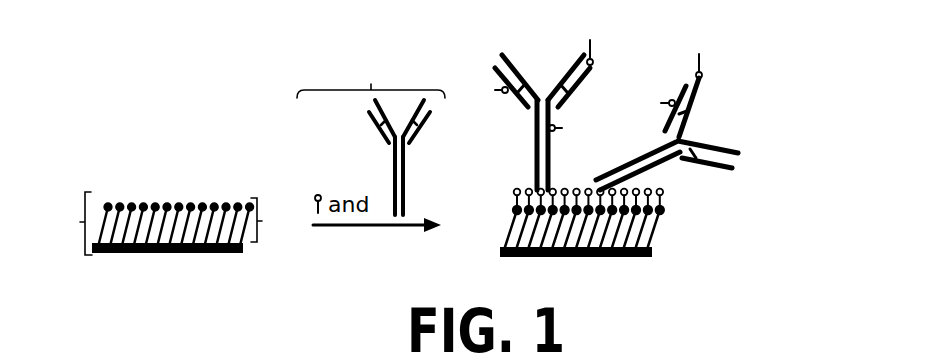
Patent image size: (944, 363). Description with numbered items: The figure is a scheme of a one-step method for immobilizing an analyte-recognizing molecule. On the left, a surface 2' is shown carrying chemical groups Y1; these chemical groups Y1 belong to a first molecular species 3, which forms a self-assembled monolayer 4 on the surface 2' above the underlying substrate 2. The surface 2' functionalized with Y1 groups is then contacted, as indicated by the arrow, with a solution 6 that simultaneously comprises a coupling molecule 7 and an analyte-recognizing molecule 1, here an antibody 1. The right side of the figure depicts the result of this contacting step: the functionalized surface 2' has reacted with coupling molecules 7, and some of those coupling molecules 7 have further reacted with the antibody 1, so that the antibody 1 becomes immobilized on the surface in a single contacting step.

The analyte-recognizing molecule 1 is at (377, 120).
The surface 2 is at (167, 265).
The functionalized surface 2' is at (77, 223).
The first molecular species 3 is at (101, 224).
The self-assembled monolayer 4 is at (265, 220).
The solution 6 is at (371, 78).
The coupling molecule 7 is at (315, 197).
The chemical groups Y1 is at (664, 212).